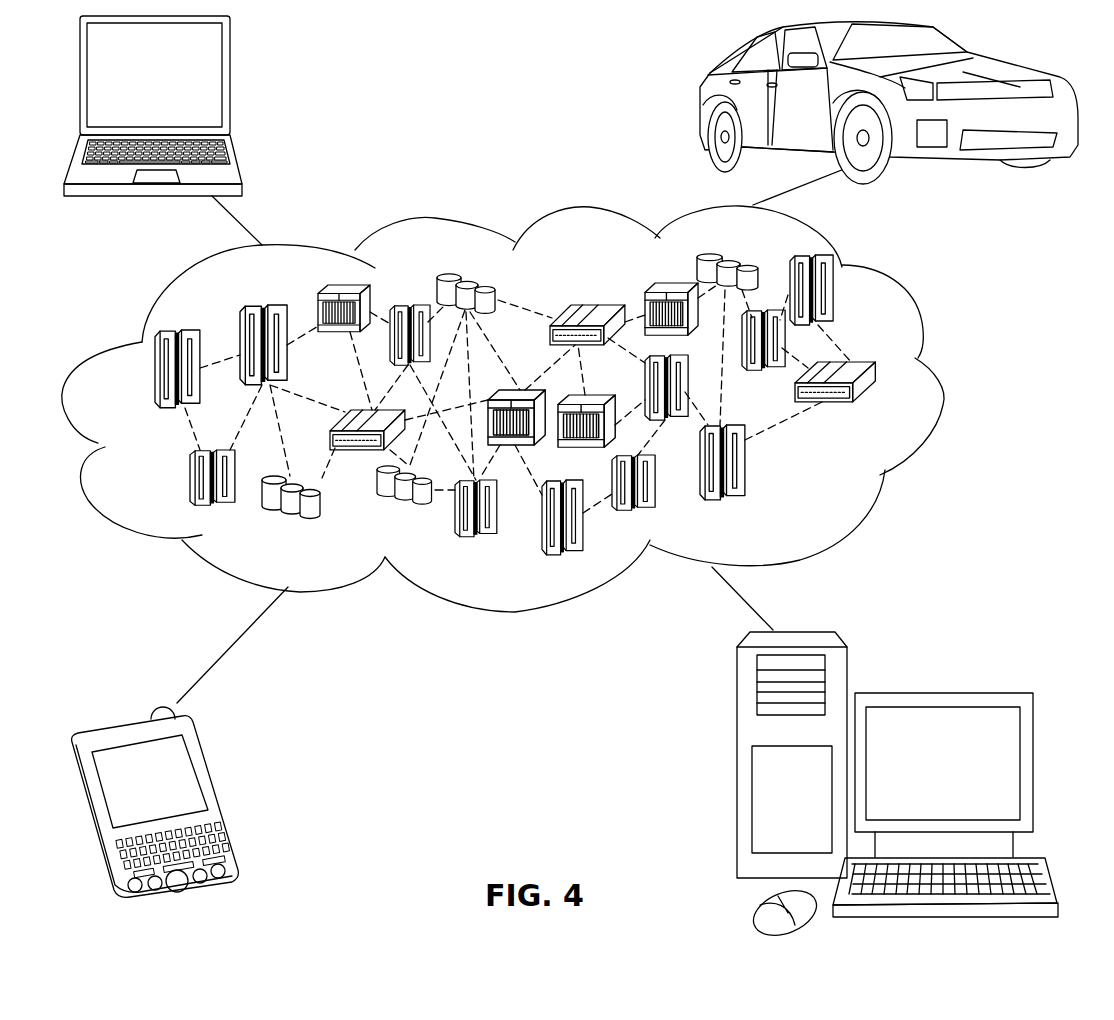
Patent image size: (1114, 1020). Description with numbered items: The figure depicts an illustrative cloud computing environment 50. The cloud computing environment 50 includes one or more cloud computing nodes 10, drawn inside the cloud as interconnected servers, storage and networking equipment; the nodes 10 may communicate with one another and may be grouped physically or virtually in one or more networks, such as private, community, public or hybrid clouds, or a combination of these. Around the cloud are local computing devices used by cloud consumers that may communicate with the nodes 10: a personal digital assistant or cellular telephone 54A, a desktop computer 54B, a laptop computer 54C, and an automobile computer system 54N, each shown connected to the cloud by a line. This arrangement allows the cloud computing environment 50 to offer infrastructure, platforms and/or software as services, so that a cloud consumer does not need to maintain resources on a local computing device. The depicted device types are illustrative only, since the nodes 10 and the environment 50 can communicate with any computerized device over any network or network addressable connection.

The cloud computing nodes 10 is at (878, 413).
The cloud computing environment 50 is at (942, 378).
The personal digital assistant (PDA) or cellular telephone 54A is at (220, 796).
The desktop computer 54B is at (940, 692).
The laptop computer 54C is at (230, 84).
The automobile computer system 54N is at (705, 100).